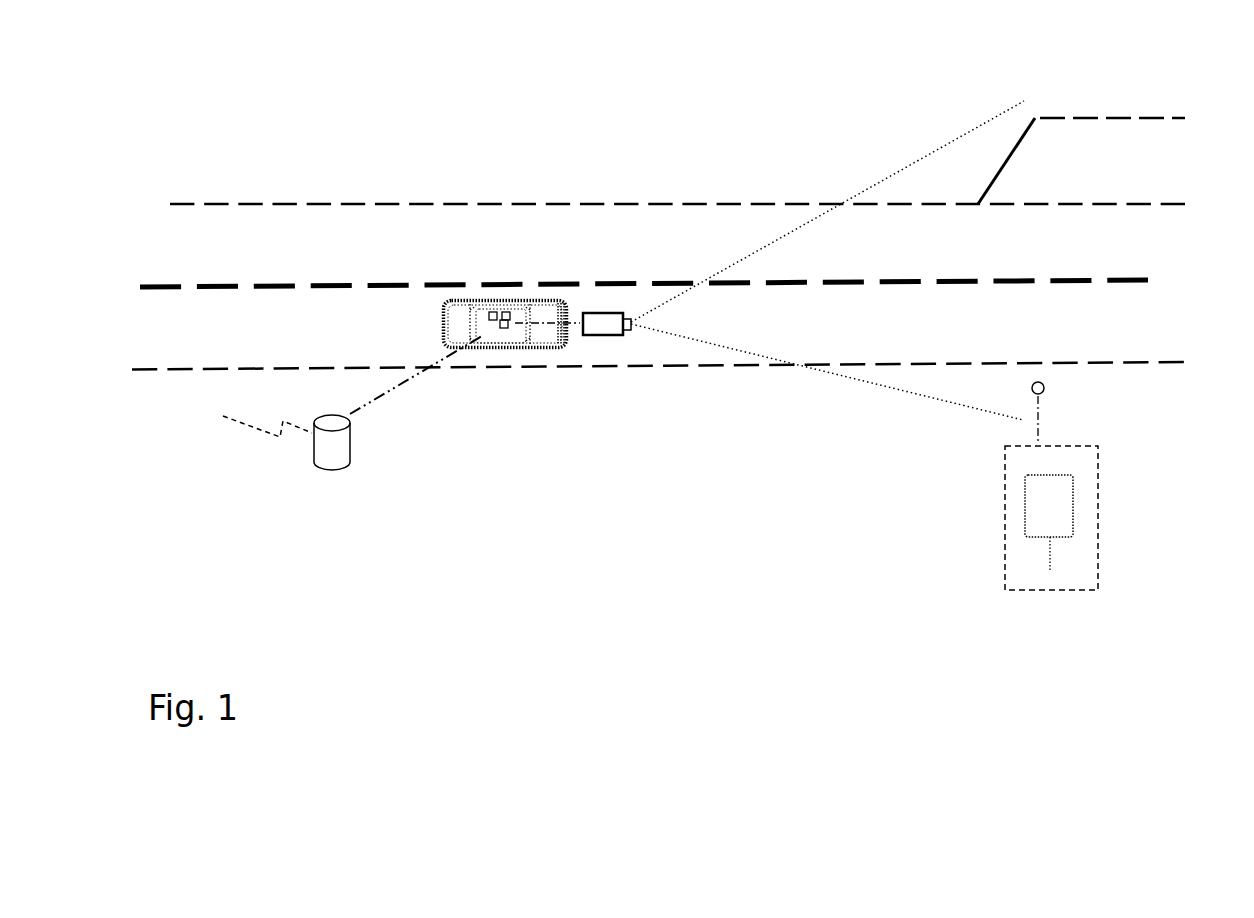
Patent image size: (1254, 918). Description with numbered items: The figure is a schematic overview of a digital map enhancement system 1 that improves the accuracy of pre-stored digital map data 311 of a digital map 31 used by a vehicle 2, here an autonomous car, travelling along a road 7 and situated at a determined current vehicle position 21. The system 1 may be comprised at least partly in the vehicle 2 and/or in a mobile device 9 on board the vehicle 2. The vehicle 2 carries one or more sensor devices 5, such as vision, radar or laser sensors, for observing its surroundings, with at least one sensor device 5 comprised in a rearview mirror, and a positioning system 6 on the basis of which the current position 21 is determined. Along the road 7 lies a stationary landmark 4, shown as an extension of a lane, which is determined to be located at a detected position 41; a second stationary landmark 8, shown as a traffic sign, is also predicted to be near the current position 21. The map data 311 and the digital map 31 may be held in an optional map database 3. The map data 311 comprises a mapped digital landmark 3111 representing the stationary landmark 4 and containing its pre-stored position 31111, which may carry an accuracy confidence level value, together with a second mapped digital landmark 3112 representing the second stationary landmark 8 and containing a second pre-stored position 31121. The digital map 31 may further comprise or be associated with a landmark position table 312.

The digital map enhancement system 1 is at (683, 90).
The vehicle 2 is at (442, 291).
The current vehicle position 21 is at (442, 291).
The map database 3 is at (412, 458).
The digital map 31 is at (426, 497).
The digital map data 311 is at (445, 497).
The landmark position table 312 is at (314, 443).
The mapped digital landmark 3111 is at (406, 497).
The pre-stored position 31111 is at (406, 497).
The second mapped digital landmark 3112 is at (476, 501).
The second pre-stored position 31121 is at (476, 521).
The stationary landmark 4 is at (1096, 134).
The detected position 41 is at (1100, 103).
The sensor device 5 is at (603, 307).
The positioning system 6 is at (493, 302).
The road 7 is at (222, 193).
The second stationary landmark 8 is at (1056, 389).
The mobile device 9 is at (498, 303).